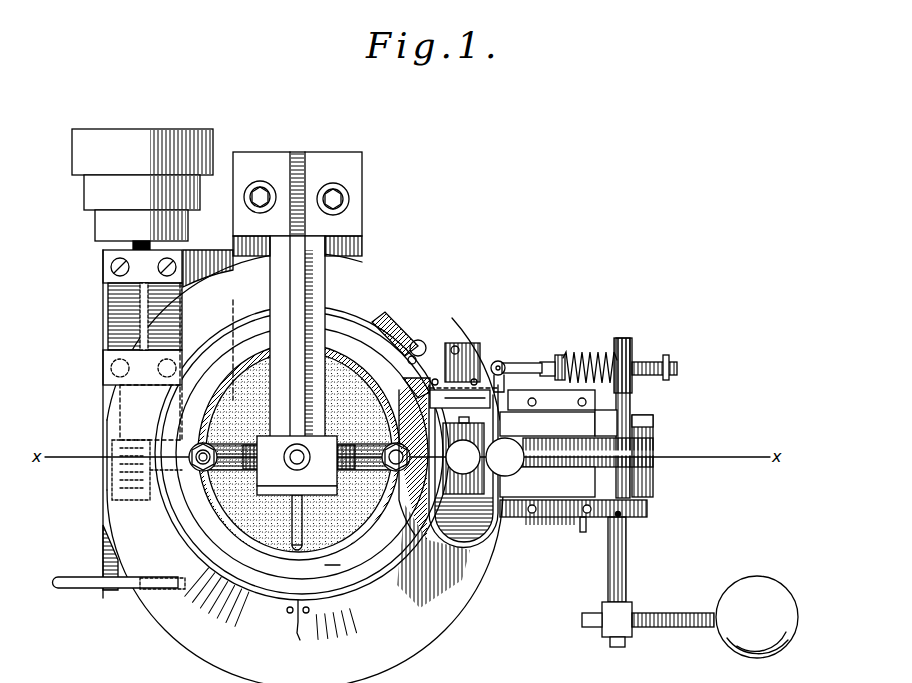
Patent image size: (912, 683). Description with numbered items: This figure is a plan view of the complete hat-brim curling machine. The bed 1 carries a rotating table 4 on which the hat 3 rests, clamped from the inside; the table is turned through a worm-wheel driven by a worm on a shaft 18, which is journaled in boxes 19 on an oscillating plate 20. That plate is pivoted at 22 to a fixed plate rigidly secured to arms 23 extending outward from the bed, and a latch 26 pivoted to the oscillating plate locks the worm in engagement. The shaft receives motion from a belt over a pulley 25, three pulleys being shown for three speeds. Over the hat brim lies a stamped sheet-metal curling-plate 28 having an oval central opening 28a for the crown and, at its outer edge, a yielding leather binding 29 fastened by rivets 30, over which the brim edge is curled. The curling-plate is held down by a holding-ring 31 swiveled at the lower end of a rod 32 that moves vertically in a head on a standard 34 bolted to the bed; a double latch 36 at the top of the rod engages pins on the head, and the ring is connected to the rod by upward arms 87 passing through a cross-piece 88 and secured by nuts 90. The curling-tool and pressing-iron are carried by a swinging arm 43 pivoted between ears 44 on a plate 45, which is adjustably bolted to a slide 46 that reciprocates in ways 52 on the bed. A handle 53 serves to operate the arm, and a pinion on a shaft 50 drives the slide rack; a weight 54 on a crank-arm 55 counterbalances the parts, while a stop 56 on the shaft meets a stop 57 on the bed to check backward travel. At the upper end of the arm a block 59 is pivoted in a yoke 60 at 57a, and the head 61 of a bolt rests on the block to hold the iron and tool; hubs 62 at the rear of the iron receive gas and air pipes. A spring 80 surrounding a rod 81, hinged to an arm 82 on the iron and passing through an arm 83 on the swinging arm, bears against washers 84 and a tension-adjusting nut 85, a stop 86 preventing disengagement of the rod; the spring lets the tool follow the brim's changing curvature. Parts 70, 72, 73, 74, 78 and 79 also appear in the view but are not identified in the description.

The bed 1 is at (362, 262).
The hat 3 is at (240, 398).
The rotating table 4 is at (305, 468).
The shaft 18 is at (140, 325).
The boxes 19 is at (102, 266).
The oscillating plate 20 is at (102, 555).
The pivot 22 is at (140, 298).
The arms 23 is at (208, 257).
The pulley 25 is at (142, 189).
The latch 26 is at (135, 590).
The curling-plate 28 is at (275, 570).
The central opening 28a is at (240, 535).
The yielding binding 29 is at (282, 606).
The rivets 30 is at (298, 627).
The holding-ring 31 is at (324, 535).
The rod 32 is at (291, 460).
The standard 34 is at (266, 236).
The double latch 36 is at (275, 444).
The swinging arm 43 is at (558, 470).
The ears 44 is at (653, 420).
The plate 45 is at (558, 423).
The slide 46 is at (600, 525).
The shaft 50 is at (626, 580).
The ways 52 is at (545, 540).
The handle 53 is at (505, 457).
The weight 54 is at (757, 617).
The crank-arm 55 is at (680, 628).
The stop 56 is at (628, 520).
The stop 57 is at (550, 551).
The bracket 57a is at (470, 505).
The block 59 is at (412, 460).
The yoke 60 is at (436, 448).
The head 61 is at (463, 455).
The hubs 62 is at (458, 348).
The pawl 70 is at (406, 395).
The block 72 is at (462, 362).
The pin 73 is at (465, 380).
The plate 74 is at (460, 399).
The arm 78 is at (415, 337).
The roller 79 is at (425, 352).
The spring 80 is at (596, 396).
The rod 81 is at (520, 363).
The arm 82 is at (494, 367).
The arm 83 is at (630, 338).
The washers 84 is at (612, 352).
The nut 85 is at (557, 354).
The stop 86 is at (667, 355).
The arms 87 is at (194, 476).
The cross-piece 88 is at (373, 457).
The nuts 90 is at (220, 441).